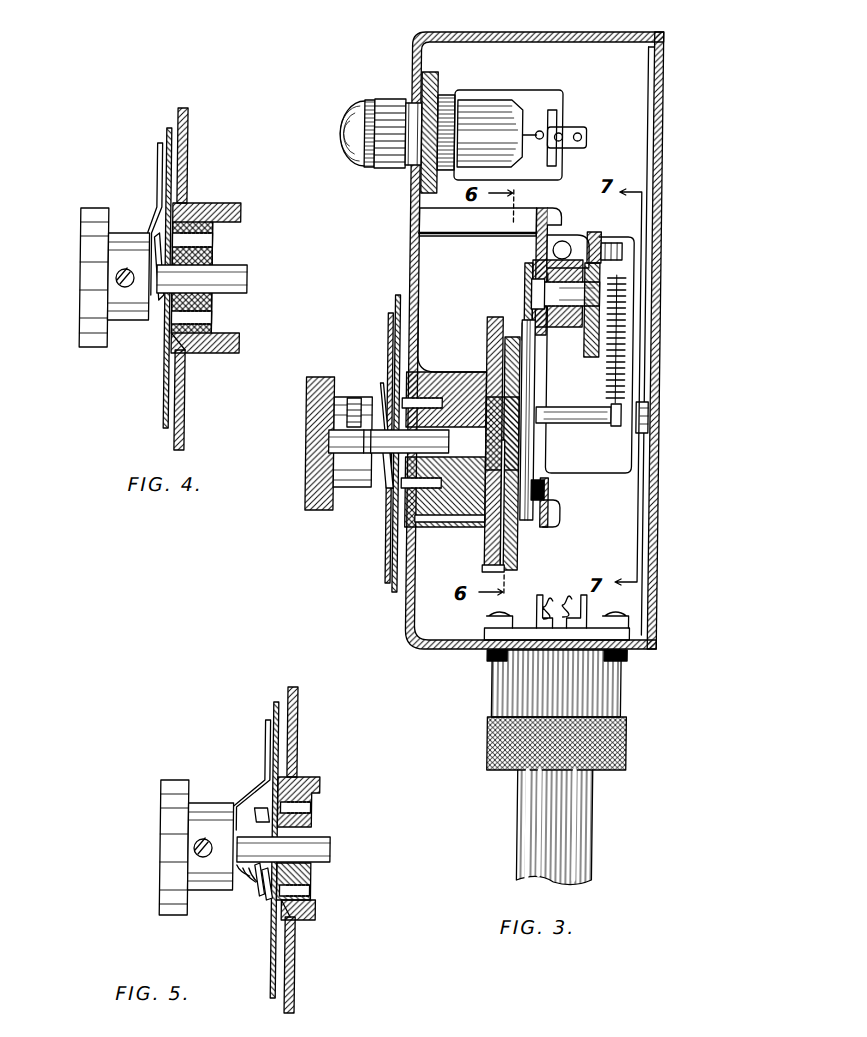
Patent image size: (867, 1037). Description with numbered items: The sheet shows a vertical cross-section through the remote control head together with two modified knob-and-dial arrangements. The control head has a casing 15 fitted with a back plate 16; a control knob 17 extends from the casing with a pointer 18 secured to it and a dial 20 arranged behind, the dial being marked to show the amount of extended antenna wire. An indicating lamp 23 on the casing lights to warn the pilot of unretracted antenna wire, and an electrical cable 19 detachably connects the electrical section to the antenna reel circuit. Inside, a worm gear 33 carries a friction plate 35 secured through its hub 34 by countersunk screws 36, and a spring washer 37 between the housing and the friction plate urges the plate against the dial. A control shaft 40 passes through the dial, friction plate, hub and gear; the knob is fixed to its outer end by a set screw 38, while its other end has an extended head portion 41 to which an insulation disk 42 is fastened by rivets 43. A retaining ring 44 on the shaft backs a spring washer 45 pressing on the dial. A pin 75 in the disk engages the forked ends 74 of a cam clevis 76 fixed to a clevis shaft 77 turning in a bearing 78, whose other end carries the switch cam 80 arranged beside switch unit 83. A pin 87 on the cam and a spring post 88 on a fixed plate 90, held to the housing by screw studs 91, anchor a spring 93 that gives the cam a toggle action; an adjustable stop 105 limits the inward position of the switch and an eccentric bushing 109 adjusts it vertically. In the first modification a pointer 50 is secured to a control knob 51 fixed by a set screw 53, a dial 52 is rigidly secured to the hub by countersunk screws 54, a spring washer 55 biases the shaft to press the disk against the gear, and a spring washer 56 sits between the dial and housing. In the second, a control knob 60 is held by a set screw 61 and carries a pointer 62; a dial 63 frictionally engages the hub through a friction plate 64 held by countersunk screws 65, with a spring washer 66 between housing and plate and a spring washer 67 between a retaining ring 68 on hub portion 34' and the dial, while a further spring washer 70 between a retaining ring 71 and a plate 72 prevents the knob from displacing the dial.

In FIG. 3, the casing 15 is at (537, 40).
In FIG. 4, the casing 15 is at (186, 134).
In FIG. 5, the casing 15 is at (296, 733).
In FIG. 3, the back plate 16 is at (660, 170).
In FIG. 3, the control knob 17 is at (307, 394).
In FIG. 3, the pointer 18 is at (388, 318).
In FIG. 3, the electrical cable 19 is at (535, 814).
In FIG. 3, the dial 20 is at (395, 545).
In FIG. 3, the indicating lamp 23 is at (347, 120).
In FIG. 3, the worm gear 33 is at (490, 540).
In FIG. 3, the hub 34 is at (446, 437).
In FIG. 4, the hub 34 is at (224, 278).
In FIG. 5, the hub 34 is at (317, 838).
In FIG. 5, the hub portion 34' is at (241, 911).
In FIG. 3, the friction plate 35 is at (412, 330).
In FIG. 3, the countersunk screws 36 is at (420, 395).
In FIG. 3, the spring washer 37 is at (425, 522).
In FIG. 3, the set screw 38 is at (355, 398).
In FIG. 3, the control shaft 40 is at (338, 441).
In FIG. 4, the control shaft 40 is at (247, 281).
In FIG. 5, the control shaft 40 is at (325, 841).
In FIG. 3, the head portion 41 is at (546, 489).
In FIG. 3, the insulation disk 42 is at (508, 568).
In FIG. 3, the rivets 43 is at (520, 470).
In FIG. 3, the retaining ring 44 is at (392, 478).
In FIG. 3, the spring washer 45 is at (383, 400).
In FIG. 4, the pointer 50 is at (156, 160).
In FIG. 4, the control knob 51 is at (80, 237).
In FIG. 4, the dial 52 is at (165, 131).
In FIG. 4, the set screw 53 is at (125, 268).
In FIG. 4, the countersunk screws 54 is at (212, 243).
In FIG. 4, the spring washer 55 is at (159, 321).
In FIG. 4, the spring washer 56 is at (190, 351).
In FIG. 5, the control knob 60 is at (160, 822).
In FIG. 5, the set screw 61 is at (205, 838).
In FIG. 5, the pointer 62 is at (264, 737).
In FIG. 5, the dial 63 is at (274, 702).
In FIG. 5, the friction plate 64 is at (290, 930).
In FIG. 5, the countersunk screws 65 is at (310, 808).
In FIG. 5, the spring washer 66 is at (316, 912).
In FIG. 5, the spring washer 67 is at (266, 900).
In FIG. 5, the retaining ring 68 is at (261, 808).
In FIG. 5, the spring washer 70 is at (250, 882).
In FIG. 5, the retaining ring 71 is at (242, 878).
In FIG. 5, the plate 72 is at (256, 886).
In FIG. 3, the forked ends 74 is at (535, 385).
In FIG. 3, the pin 75 is at (535, 335).
In FIG. 3, the cam clevis 76 is at (524, 273).
In FIG. 3, the clevis shaft 77 is at (531, 293).
In FIG. 3, the bearing 78 is at (577, 327).
In FIG. 3, the switch cam 80 is at (591, 357).
In FIG. 3, the switch unit 83 is at (632, 463).
In FIG. 3, the pin 87 is at (621, 251).
In FIG. 3, the spring post 88 is at (600, 424).
In FIG. 3, the fixed plate 90 is at (535, 243).
In FIG. 3, the screw studs 91 is at (526, 214).
In FIG. 3, the spring 93 is at (626, 356).
In FIG. 3, the adjustable stop 105 is at (568, 242).
In FIG. 3, the eccentric bushing 109 is at (650, 408).